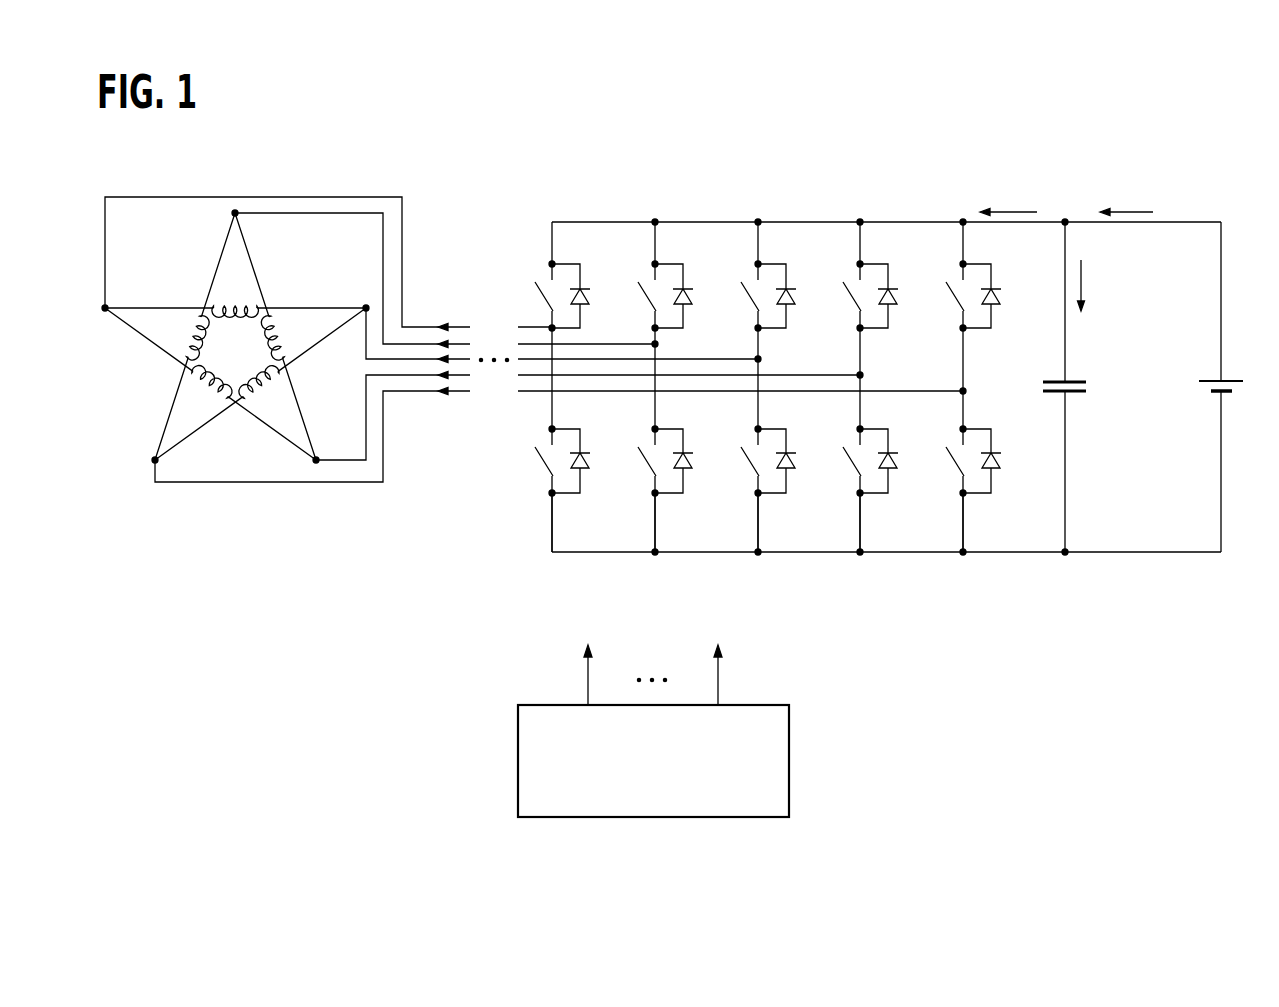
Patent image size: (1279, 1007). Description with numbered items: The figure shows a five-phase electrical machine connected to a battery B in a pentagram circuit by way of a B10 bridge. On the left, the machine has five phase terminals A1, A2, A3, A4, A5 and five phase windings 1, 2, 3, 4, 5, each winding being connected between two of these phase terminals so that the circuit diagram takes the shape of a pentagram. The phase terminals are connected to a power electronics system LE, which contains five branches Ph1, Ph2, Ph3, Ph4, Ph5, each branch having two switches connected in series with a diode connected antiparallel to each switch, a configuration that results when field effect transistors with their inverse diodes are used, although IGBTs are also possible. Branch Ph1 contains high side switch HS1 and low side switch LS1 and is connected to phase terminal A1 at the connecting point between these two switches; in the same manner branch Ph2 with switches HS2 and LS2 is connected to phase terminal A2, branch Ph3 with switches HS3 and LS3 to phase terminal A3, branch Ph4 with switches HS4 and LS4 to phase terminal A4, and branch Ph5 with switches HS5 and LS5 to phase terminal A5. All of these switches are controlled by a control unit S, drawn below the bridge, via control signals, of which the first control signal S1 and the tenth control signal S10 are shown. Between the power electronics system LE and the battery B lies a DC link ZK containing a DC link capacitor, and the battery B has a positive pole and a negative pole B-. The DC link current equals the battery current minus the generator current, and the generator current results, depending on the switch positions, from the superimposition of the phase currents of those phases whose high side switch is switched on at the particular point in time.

The phase terminal A1 is at (122, 293).
The phase terminal A2 is at (217, 215).
The phase terminal A3 is at (355, 293).
The phase terminal A4 is at (333, 446).
The phase terminal A5 is at (137, 461).
The phase winding 1 is at (195, 336).
The phase winding 2 is at (235, 294).
The phase winding 3 is at (275, 336).
The phase winding 4 is at (260, 384).
The phase winding 5 is at (210, 384).
The power electronics system LE is at (860, 330).
The high side switch HS1 is at (544, 288).
The high side switch HS2 is at (647, 288).
The high side switch HS3 is at (750, 288).
The high side switch HS4 is at (852, 288).
The high side switch HS5 is at (955, 288).
The low side switch LS1 is at (547, 451).
The low side switch LS2 is at (650, 451).
The low side switch LS3 is at (753, 451).
The low side switch LS4 is at (855, 451).
The low side switch LS5 is at (958, 451).
The branch Ph1 is at (576, 522).
The branch Ph2 is at (679, 522).
The branch Ph3 is at (782, 522).
The branch Ph4 is at (884, 522).
The branch Ph5 is at (987, 522).
The DC link ZK is at (1103, 387).
The battery B is at (1235, 390).
The negative pole B- is at (1238, 471).
The control unit S is at (789, 758).
The control signal S1 is at (572, 675).
The control signal S10 is at (740, 675).